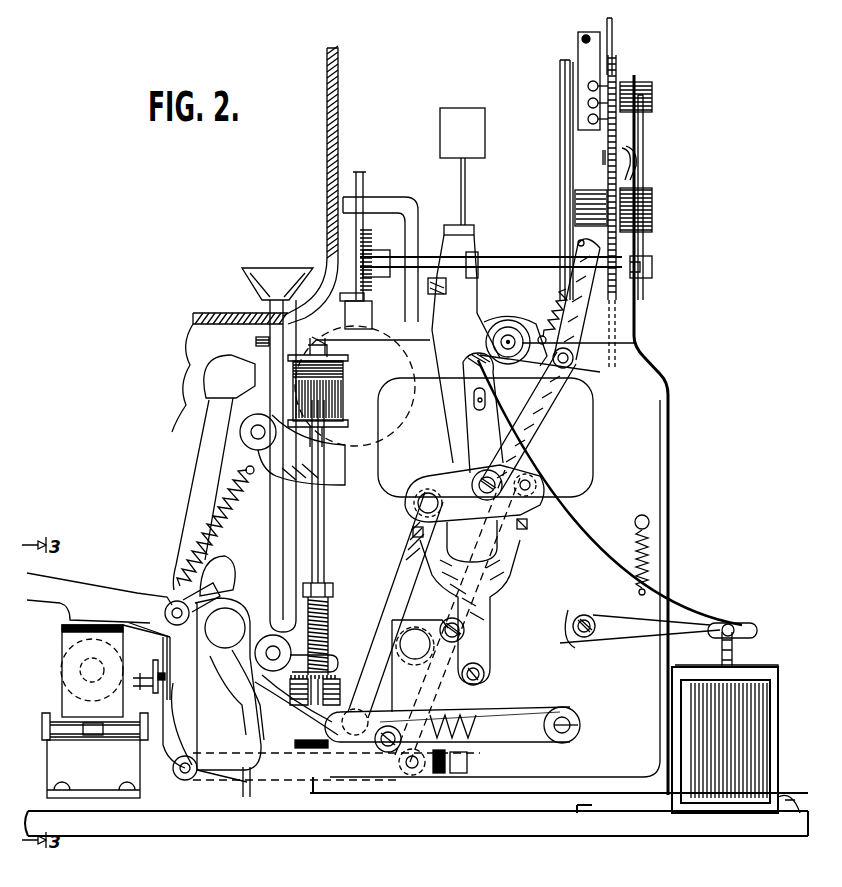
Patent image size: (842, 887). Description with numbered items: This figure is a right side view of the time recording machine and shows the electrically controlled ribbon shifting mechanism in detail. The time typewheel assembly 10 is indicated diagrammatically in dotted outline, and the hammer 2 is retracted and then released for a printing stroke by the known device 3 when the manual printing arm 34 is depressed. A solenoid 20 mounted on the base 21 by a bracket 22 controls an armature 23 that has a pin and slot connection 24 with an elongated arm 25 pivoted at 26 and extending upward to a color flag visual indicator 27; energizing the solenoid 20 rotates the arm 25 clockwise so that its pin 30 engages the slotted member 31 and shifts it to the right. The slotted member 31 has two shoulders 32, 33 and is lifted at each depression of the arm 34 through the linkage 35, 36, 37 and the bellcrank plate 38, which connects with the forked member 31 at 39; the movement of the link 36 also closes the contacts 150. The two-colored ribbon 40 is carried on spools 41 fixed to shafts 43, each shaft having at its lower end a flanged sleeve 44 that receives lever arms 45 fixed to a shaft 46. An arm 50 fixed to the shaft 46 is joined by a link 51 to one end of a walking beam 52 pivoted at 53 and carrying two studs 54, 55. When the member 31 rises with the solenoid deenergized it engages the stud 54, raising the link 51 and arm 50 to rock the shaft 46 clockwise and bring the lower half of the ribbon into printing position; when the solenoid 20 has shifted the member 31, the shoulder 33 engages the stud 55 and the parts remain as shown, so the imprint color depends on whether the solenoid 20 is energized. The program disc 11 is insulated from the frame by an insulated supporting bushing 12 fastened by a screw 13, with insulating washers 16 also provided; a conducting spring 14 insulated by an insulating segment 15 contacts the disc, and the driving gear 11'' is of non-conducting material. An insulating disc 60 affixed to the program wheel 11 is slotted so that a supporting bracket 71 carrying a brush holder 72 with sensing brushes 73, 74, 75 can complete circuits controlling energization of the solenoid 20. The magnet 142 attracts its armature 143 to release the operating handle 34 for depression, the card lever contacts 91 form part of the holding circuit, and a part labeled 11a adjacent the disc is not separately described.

The hammer 2 is at (195, 483).
The known device 3 is at (228, 576).
The time typewheel assembly 10 is at (351, 455).
The program disc 11 is at (657, 212).
The plate 11a is at (572, 150).
The driving gear 11'' is at (662, 260).
The insulated supporting bushing 12 is at (585, 203).
The screw 13 is at (568, 222).
The conducting spring 14 is at (640, 182).
The insulating segment 15 is at (630, 172).
The insulating washers 16 is at (652, 220).
The solenoid 20 is at (760, 707).
The base 21 is at (725, 830).
The bracket 22 is at (772, 810).
The armature 23 is at (740, 652).
The pin and slot connection 24 is at (735, 628).
The elongated arm 25 is at (680, 612).
The pivot 26 is at (585, 640).
The color flag visual indicator 27 is at (462, 128).
The pin 30 is at (470, 410).
The slotted member 31 is at (498, 580).
The shoulder 32 is at (412, 537).
The shoulder 33 is at (527, 524).
The manual printing arm 34 is at (105, 558).
The linkage 35 is at (175, 752).
The link 36 is at (213, 772).
The linkage 37 is at (460, 757).
The bellcrank plate 38 is at (415, 660).
The connection 39 is at (486, 676).
The two-colored ribbon 40 is at (350, 407).
The spool 41 is at (345, 360).
The shafts 43 is at (322, 535).
The flanged sleeve 44 is at (292, 722).
The lever arms 45 is at (515, 738).
The shaft 46 is at (580, 733).
The arm 50 is at (495, 710).
The link 51 is at (396, 585).
The walking beam 52 is at (465, 515).
The pivot 53 is at (480, 478).
The stud 54 is at (420, 507).
The stud 55 is at (535, 477).
The insulating disc 60 is at (607, 158).
The supporting bracket 71 is at (610, 26).
The brush holder 72 is at (582, 57).
The electrical sensing brush 73 is at (600, 87).
The electrical sensing brush 74 is at (600, 104).
The electrical sensing brush 75 is at (600, 119).
The card lever contacts 91 is at (255, 343).
The magnet 142 is at (62, 665).
The armature 143 is at (75, 705).
The contacts 150 is at (448, 778).